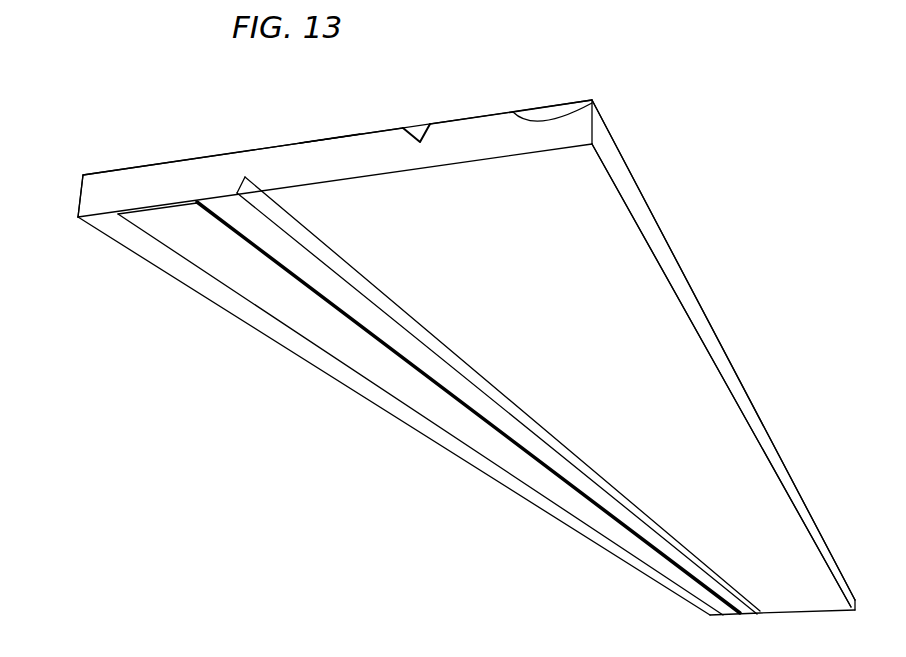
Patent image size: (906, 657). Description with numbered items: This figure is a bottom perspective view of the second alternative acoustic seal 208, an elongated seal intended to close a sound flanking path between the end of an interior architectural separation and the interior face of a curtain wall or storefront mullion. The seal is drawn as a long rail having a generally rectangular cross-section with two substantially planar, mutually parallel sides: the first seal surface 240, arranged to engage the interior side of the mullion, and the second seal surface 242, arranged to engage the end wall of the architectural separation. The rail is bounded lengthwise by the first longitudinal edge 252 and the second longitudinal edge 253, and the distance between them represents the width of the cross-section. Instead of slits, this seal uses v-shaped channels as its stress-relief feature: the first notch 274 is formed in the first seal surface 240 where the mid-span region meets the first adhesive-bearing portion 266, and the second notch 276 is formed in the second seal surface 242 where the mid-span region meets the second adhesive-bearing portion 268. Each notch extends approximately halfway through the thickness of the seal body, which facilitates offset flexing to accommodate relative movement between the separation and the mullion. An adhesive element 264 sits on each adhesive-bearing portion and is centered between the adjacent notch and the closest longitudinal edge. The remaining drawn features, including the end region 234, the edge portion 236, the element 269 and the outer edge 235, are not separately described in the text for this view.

The second alternative acoustic seal 208 is at (122, 102).
The second longitudinal edge 253 is at (82, 197).
The second adhesive-bearing portion 268 is at (147, 207).
The second notch 276 is at (237, 177).
The first seal surface 240 is at (279, 144).
The top edge 269 is at (327, 147).
The first notch 274 is at (422, 140).
The upper edge portion 236 is at (462, 125).
The end portion 234 is at (560, 101).
The first adhesive-bearing portion 266 is at (592, 103).
The second seal surface 242 is at (583, 198).
The first longitudinal edge 252 is at (655, 245).
The outer edge 235 is at (707, 317).
The adhesive element 264 is at (190, 240).